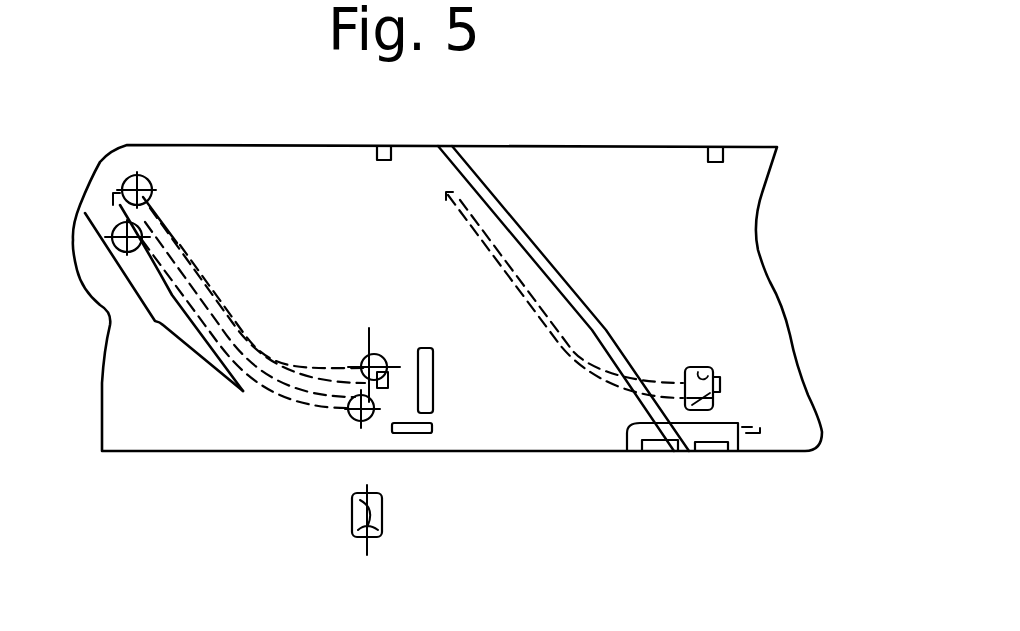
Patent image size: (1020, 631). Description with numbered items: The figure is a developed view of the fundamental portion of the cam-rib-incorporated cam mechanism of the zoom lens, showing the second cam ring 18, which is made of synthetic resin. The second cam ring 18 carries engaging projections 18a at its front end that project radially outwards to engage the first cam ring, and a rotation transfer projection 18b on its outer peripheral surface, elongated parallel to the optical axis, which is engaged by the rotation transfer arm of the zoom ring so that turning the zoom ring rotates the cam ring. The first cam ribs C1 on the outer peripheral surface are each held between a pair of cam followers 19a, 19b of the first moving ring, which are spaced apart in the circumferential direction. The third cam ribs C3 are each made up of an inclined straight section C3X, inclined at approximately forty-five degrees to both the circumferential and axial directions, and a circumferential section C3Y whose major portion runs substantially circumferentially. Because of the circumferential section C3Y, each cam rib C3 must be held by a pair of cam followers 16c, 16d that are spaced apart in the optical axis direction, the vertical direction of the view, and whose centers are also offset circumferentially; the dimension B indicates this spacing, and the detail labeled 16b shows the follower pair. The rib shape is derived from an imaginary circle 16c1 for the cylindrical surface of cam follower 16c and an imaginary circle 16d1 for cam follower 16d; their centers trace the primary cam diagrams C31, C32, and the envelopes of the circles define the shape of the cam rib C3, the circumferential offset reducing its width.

The second cam ring 18 is at (712, 277).
The engaging projection 18a is at (717, 146).
The rotation transfer projection 18b is at (427, 382).
The clip 16b is at (390, 515).
The cam follower 16c is at (700, 367).
The cam follower 16d is at (720, 398).
The imaginary circle 16c1 is at (380, 355).
The imaginary circle 16d1 is at (355, 413).
The cam follower 19a is at (653, 452).
The cam follower 19b is at (708, 452).
The first cam rib C1 is at (545, 245).
The third cam rib C3 is at (587, 380).
The primary cam diagram C31 is at (192, 255).
The primary cam diagram C32 is at (245, 392).
The inclined straight section C3X is at (164, 298).
The circumferential section C3Y is at (393, 333).
The dimension B is at (337, 493).